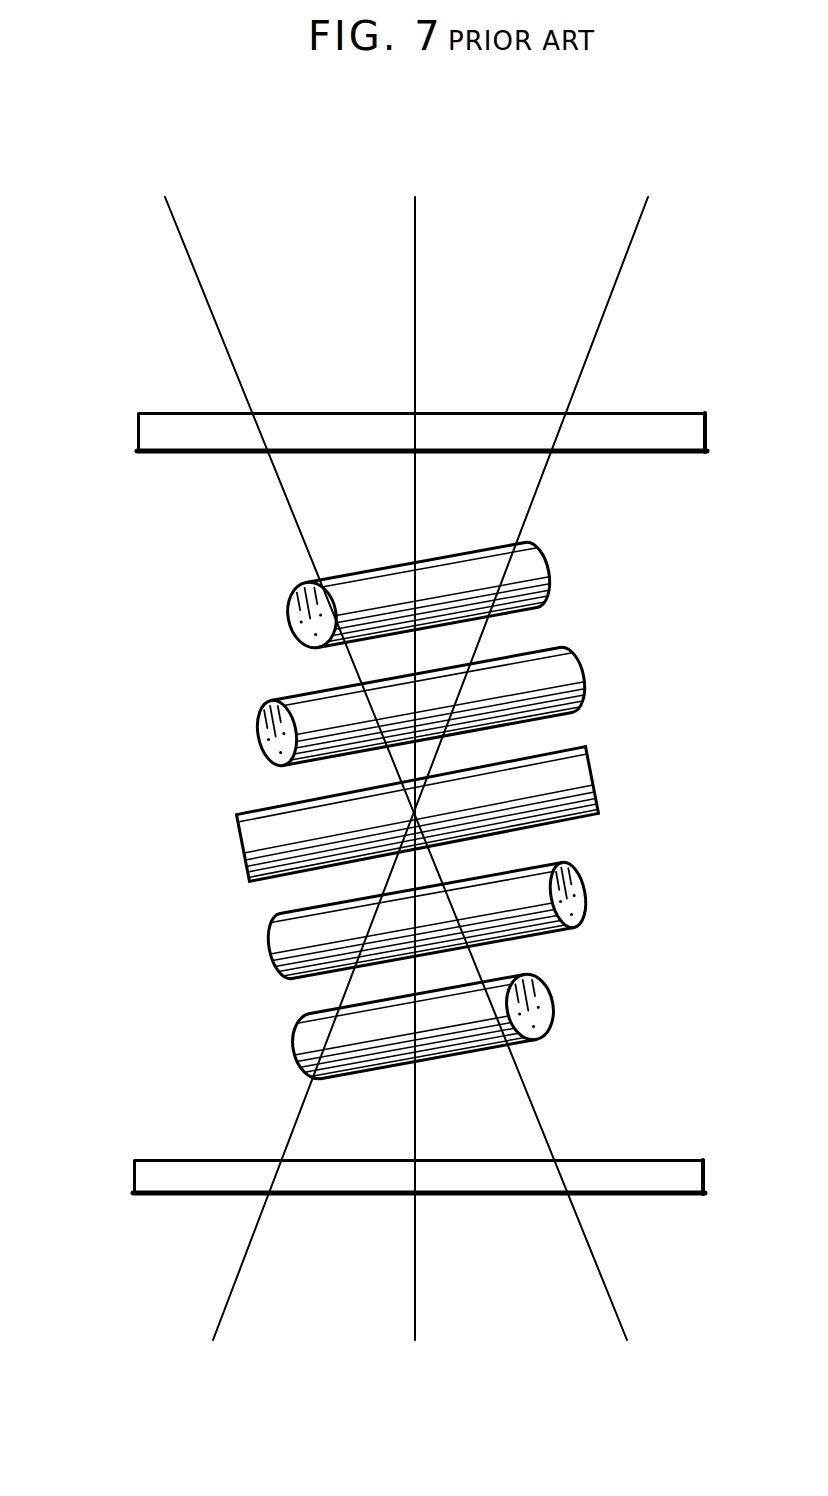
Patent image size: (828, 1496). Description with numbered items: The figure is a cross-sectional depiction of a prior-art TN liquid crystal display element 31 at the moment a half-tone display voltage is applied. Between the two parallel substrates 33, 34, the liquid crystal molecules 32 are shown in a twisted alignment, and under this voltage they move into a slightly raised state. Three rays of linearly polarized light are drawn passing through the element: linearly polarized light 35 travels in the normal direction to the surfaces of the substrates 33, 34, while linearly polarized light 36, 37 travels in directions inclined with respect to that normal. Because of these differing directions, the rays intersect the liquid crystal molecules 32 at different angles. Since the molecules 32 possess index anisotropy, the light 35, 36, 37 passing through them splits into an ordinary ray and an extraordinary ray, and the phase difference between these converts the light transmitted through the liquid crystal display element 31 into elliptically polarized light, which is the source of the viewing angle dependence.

The TN liquid crystal display element 31 is at (102, 412).
The liquid crystal molecules 32 is at (628, 533).
The substrate 33 is at (660, 428).
The substrate 34 is at (660, 1185).
The linearly polarized light 35 is at (422, 220).
The linearly polarized light 36 is at (180, 212).
The linearly polarized light 37 is at (650, 220).